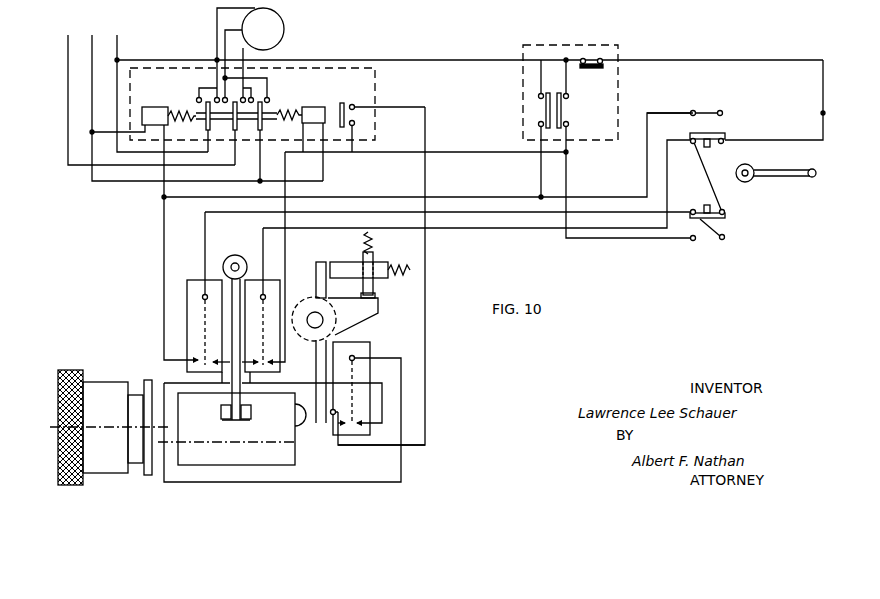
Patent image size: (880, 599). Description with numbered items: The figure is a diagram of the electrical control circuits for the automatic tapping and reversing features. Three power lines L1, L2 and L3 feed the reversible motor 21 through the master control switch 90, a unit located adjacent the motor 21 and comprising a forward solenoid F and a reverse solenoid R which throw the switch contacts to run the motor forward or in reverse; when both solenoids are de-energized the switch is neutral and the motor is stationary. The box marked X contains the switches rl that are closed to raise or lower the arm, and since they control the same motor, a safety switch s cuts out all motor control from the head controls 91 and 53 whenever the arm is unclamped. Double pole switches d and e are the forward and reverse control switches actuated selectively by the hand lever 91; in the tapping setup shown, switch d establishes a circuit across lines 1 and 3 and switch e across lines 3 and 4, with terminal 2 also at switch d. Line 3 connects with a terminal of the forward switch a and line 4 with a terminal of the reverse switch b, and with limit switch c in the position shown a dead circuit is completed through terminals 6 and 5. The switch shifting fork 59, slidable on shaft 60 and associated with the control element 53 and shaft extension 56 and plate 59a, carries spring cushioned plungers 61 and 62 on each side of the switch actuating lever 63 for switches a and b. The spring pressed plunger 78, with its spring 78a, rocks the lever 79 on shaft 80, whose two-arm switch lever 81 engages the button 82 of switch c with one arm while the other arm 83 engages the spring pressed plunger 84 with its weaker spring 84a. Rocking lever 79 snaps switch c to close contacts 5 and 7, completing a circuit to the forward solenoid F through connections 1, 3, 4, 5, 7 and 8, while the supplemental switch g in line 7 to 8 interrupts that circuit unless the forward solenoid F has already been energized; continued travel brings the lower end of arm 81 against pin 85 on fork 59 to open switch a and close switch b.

The power line L1 is at (201, 93).
The power line L2 is at (464, 78).
The power line L3 is at (143, 85).
The reversible motor 21 is at (284, 31).
The master control switch 90 is at (375, 80).
The reverse solenoid R is at (160, 114).
The forward solenoid F is at (320, 113).
The supplemental safety switch g is at (357, 109).
The connection line 7 is at (349, 254).
The connection line 8 is at (476, 242).
The switch box X is at (618, 48).
The arm raising and lowering switches rl is at (538, 109).
The safety switch s is at (591, 70).
The forward control switch d is at (686, 145).
The reverse control switch e is at (707, 235).
The connection line 1 is at (730, 127).
The connection line 2 is at (436, 227).
The connection line 3 is at (493, 222).
The connection line 4 is at (464, 246).
The terminal 5 is at (279, 353).
The terminal 6 is at (307, 382).
The hand lever 91 is at (780, 182).
The forward switch a is at (275, 280).
The reverse switch b is at (196, 279).
The limit switch c is at (355, 351).
The control element 53 is at (105, 392).
The shaft extension 56 is at (113, 428).
The switch shifting fork 59 is at (296, 462).
The plate 59a is at (137, 380).
The shaft 60 is at (185, 440).
The spring cushioned plunger 61 is at (222, 421).
The spring cushioned plunger 62 is at (249, 421).
The switch actuating lever 63 is at (235, 424).
The pin 85 is at (298, 405).
The spring pressed plunger 78 is at (375, 289).
The spring 78a is at (375, 244).
The switch actuating lever 79 is at (365, 315).
The shaft 80 is at (323, 318).
The two-arm switch lever 81 is at (310, 298).
The switch button 82 is at (335, 422).
The arm 83 is at (316, 265).
The spring pressed plunger 84 is at (342, 262).
The spring 84a is at (412, 270).